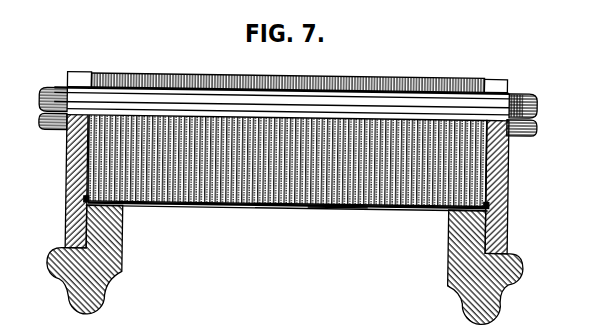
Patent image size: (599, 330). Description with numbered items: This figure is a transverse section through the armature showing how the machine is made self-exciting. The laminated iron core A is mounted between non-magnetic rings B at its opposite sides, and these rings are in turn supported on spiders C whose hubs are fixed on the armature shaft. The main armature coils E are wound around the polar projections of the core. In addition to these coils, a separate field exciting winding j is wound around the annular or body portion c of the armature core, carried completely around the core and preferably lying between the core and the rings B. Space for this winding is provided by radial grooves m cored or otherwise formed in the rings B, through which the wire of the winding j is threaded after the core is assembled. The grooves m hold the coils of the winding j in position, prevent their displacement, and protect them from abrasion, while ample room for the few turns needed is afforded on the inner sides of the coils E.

The laminated iron core A is at (237, 188).
The non-magnetic rings B is at (58, 165).
The spiders C is at (107, 270).
The armature coils E is at (528, 90).
The radial grooves m is at (77, 190).
The field exciting winding j is at (327, 200).
The annular or body portion c is at (349, 198).